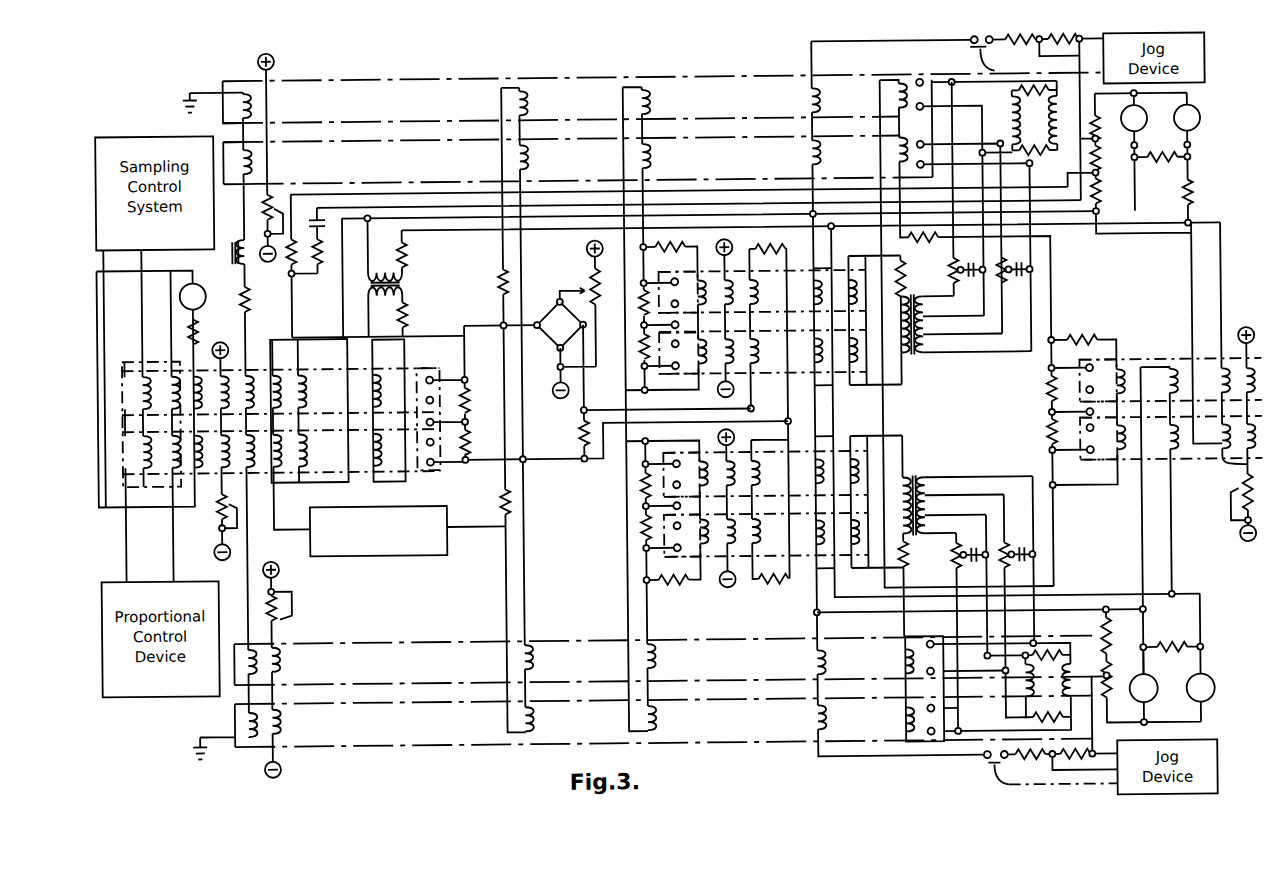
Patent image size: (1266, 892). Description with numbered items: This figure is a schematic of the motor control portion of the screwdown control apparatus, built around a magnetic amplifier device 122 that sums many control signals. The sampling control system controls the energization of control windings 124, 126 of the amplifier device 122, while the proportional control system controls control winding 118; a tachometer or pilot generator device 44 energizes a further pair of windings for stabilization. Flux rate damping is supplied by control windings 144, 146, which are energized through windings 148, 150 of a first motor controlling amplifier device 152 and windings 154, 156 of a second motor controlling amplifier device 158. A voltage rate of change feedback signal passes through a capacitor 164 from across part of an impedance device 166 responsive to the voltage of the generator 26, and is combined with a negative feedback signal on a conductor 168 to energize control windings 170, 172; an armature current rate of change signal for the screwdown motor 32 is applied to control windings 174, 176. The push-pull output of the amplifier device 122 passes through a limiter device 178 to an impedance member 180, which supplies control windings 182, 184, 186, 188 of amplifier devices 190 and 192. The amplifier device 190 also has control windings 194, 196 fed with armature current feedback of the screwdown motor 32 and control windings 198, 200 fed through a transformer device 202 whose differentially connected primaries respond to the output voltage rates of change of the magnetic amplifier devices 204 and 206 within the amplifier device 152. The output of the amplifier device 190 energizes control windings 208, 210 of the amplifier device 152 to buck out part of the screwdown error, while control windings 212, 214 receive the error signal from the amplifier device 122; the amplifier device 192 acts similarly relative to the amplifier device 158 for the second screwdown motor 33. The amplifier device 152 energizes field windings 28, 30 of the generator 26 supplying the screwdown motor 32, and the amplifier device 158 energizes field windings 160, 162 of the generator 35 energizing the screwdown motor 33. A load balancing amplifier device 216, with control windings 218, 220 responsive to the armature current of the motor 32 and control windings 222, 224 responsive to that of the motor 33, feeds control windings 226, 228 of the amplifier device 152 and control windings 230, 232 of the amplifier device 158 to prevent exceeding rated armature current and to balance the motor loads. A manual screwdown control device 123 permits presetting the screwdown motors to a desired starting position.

The generator 26 is at (1143, 136).
The field winding 28 is at (1029, 120).
The field winding 30 is at (1042, 120).
The screwdown motor 32 is at (1202, 120).
The second screwdown motor 33 is at (1200, 679).
The generator 35 is at (1146, 679).
The tachometer or pilot generator device 44 is at (181, 290).
The control winding 118 is at (175, 372).
The amplifier device 122 is at (325, 360).
The manual screwdown control device 123 is at (437, 504).
The control winding 124 is at (143, 465).
The control winding 126 is at (143, 378).
The control winding 144 is at (247, 466).
The control winding 146 is at (248, 350).
The winding 148 is at (241, 178).
The winding 150 is at (228, 112).
The first motor controlling amplifier device 152 is at (476, 68).
The winding 154 is at (246, 648).
The winding 156 is at (232, 720).
The second motor controlling amplifier device 158 is at (399, 773).
The field winding 160 is at (1043, 680).
The field winding 162 is at (1051, 688).
The capacitor 164 is at (325, 225).
The impedance device 166 is at (1104, 192).
The conductor 168 is at (322, 191).
The control winding 170 is at (300, 458).
The control winding 172 is at (300, 394).
The control winding 174 is at (373, 466).
The control winding 176 is at (375, 374).
The limiter device 178 is at (552, 296).
The impedance member 180 is at (580, 432).
The control winding 182 is at (750, 362).
The control winding 184 is at (750, 300).
The control winding 186 is at (752, 545).
The control winding 188 is at (752, 462).
The amplifier device 190 is at (783, 396).
The amplifier device 192 is at (783, 606).
The control winding 194 is at (815, 366).
The control winding 196 is at (815, 285).
The control winding 198 is at (850, 366).
The control winding 200 is at (850, 285).
The transformer device 202 is at (941, 293).
The magnetic amplifier device 204 is at (747, 99).
The amplifier device 206 is at (749, 166).
The control winding 208 is at (652, 156).
The control winding 210 is at (651, 100).
The control winding 212 is at (531, 157).
The control winding 214 is at (531, 100).
The amplifier device 216 is at (1160, 340).
The control winding 218 is at (1238, 468).
The control winding 220 is at (1224, 340).
The control winding 222 is at (1168, 460).
The control winding 224 is at (1168, 374).
The control winding 226 is at (897, 157).
The control winding 228 is at (897, 104).
The control winding 230 is at (849, 717).
The control winding 232 is at (848, 659).